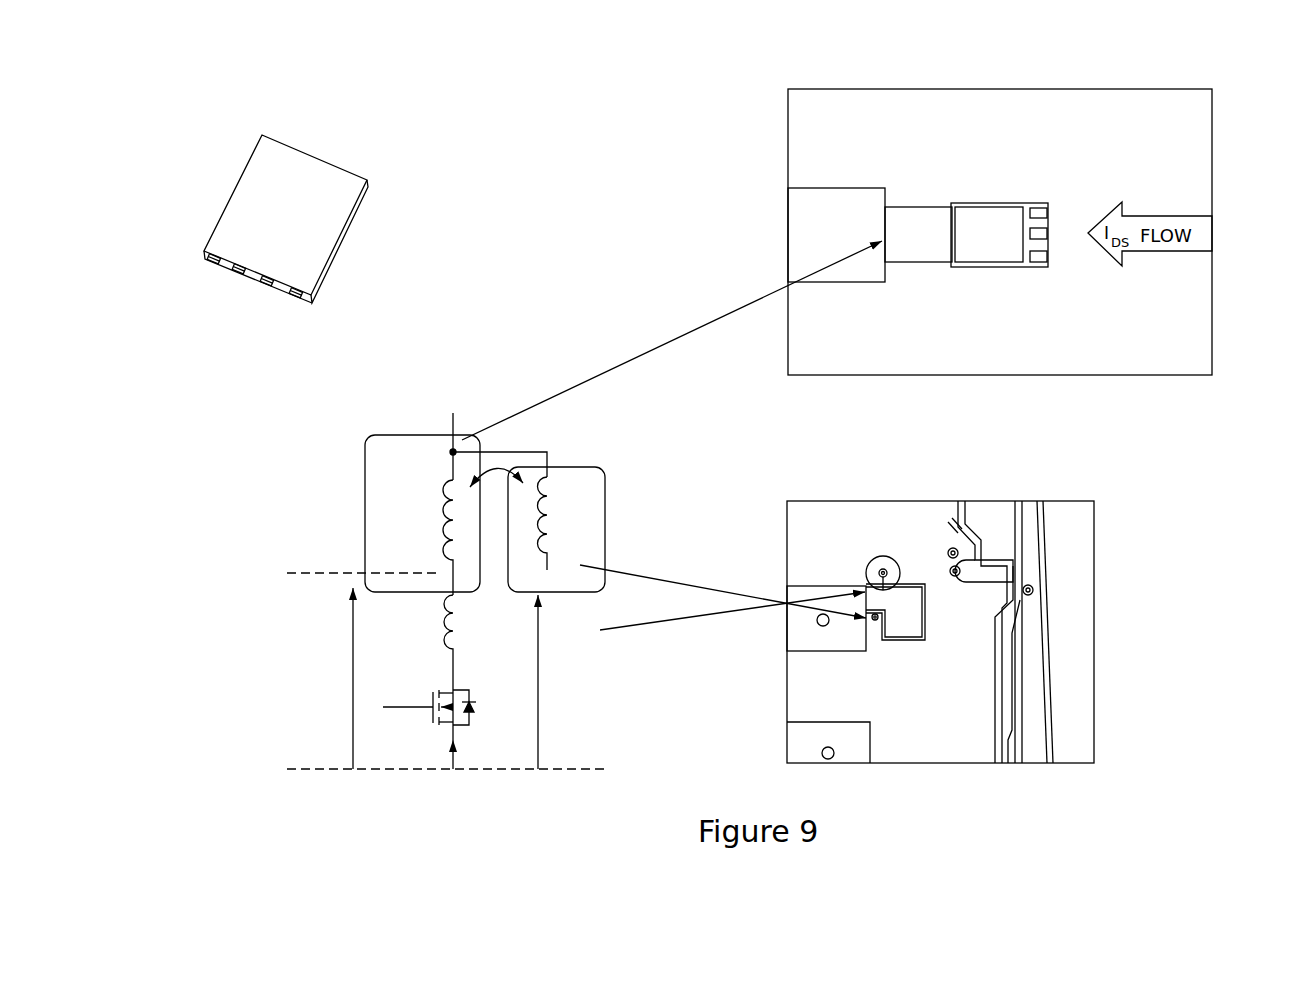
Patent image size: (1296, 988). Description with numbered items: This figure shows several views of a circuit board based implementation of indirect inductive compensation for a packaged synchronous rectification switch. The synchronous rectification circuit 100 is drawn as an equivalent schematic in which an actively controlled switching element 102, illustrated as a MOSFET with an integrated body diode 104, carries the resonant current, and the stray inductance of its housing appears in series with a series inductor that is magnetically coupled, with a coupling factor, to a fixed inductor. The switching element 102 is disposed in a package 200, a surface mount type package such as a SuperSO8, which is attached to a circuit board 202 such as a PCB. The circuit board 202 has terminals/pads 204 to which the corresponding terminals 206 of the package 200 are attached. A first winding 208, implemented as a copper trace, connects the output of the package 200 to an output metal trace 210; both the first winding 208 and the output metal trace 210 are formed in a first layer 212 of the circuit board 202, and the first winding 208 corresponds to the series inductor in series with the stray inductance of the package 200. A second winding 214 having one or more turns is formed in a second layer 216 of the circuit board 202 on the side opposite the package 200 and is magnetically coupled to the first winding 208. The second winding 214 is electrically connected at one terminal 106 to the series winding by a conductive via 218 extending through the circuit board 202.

The synchronous rectification circuit 100 is at (320, 497).
The actively controlled switching element 102 is at (432, 682).
The integrated body diode 104 is at (471, 683).
The terminal 106 is at (443, 442).
The package 200 is at (607, 210).
The circuit board 202 is at (1118, 88).
The terminals/pads 204 is at (1004, 245).
The terminals of the package 206 is at (296, 297).
The first winding 208 is at (934, 245).
The output metal trace 210 is at (851, 245).
The first layer 212 is at (1178, 352).
The second winding 214 is at (905, 658).
The second layer 216 is at (934, 613).
The conductive via 218 is at (880, 556).